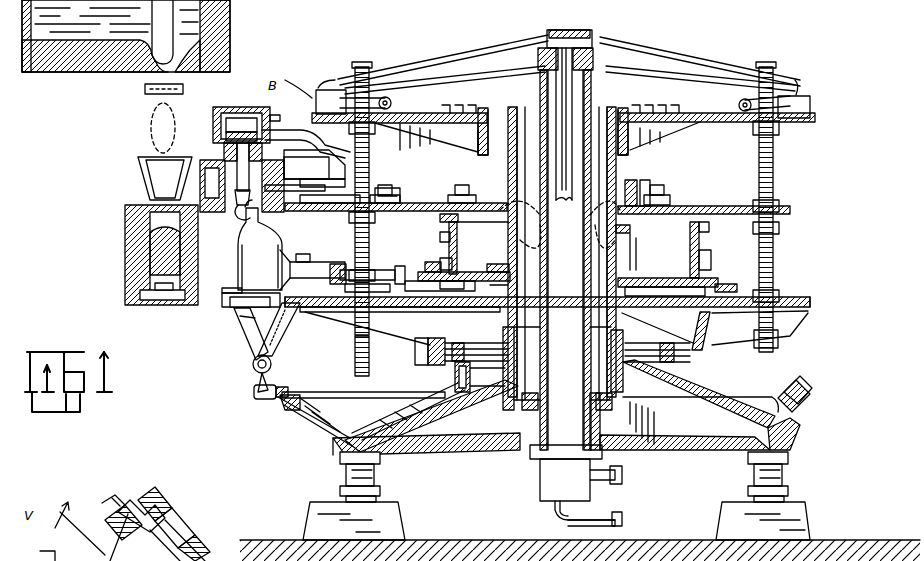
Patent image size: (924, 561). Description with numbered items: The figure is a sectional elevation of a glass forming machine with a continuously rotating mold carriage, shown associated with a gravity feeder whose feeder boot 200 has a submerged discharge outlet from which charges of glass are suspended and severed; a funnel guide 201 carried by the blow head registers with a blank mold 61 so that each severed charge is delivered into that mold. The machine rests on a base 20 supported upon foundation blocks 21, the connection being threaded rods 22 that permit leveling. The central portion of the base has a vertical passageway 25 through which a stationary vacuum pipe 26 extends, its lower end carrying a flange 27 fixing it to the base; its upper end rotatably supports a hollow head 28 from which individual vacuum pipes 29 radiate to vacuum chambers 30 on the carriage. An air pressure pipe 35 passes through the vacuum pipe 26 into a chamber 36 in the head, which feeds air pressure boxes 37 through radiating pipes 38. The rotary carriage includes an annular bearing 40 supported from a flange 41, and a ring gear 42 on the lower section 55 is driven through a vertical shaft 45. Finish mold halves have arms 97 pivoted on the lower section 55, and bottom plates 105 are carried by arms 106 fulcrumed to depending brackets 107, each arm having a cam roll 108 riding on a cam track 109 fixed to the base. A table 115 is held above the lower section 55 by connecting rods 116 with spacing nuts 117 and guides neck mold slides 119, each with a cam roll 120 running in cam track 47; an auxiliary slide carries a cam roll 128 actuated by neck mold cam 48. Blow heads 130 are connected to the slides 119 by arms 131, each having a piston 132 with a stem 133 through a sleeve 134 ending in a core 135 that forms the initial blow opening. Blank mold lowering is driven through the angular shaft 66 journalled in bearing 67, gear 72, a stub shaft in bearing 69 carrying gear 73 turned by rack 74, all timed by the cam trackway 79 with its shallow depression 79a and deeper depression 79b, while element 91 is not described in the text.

The feeder boot 200 is at (115, 70).
The funnel guide 201 is at (137, 162).
The blank mold 61 is at (125, 243).
The blow head 130 is at (250, 108).
The arm 131 is at (310, 145).
The piston 132 is at (228, 132).
The stem 133 is at (236, 192).
The sleeve 134 is at (300, 172).
The core 135 is at (238, 220).
The bottom plate 105 is at (222, 310).
The arm 106 is at (252, 355).
The depending bracket 107 is at (280, 345).
The cam roll 108 is at (253, 398).
The cam track 109 is at (285, 410).
The air pressure box 37 is at (328, 90).
The radiating pipe 38 is at (490, 46).
The chamber 36 is at (562, 30).
The vacuum pipe 29 is at (470, 76).
The hollow head 28 is at (598, 84).
The vacuum chamber 30 is at (805, 92).
The neck mold cam track 48 is at (390, 183).
The cam track 47 is at (462, 184).
The cam roll 128 is at (400, 185).
The air pressure pipe 35 is at (556, 182).
The cam roll 120 is at (665, 194).
The neck mold slide 119 is at (733, 205).
The connecting rod 116 is at (773, 160).
The spacing nut 117 is at (350, 223).
The table 115 is at (385, 215).
The vertical shaft 45 is at (290, 260).
The arm 97 is at (310, 260).
The cam trackway 79 is at (478, 250).
The bearing plate 91 is at (486, 275).
The depression 79a is at (484, 250).
The depression 79b is at (565, 250).
The lower section 55 is at (338, 312).
The annular bearing 40 is at (414, 350).
The ring gear 42 is at (416, 355).
The flange 41 is at (454, 378).
The vacuum pipe 26 is at (563, 368).
The vertical passageway 25 is at (535, 420).
The base 20 is at (480, 445).
The flange 27 is at (532, 460).
The threaded rod 22 is at (374, 482).
The foundation block 21 is at (396, 523).
The shaft 66 is at (105, 558).
The bearing 67 is at (112, 496).
The bearing 69 is at (134, 508).
The gear 72 is at (105, 518).
The gear 73 is at (160, 506).
The rack 74 is at (200, 548).